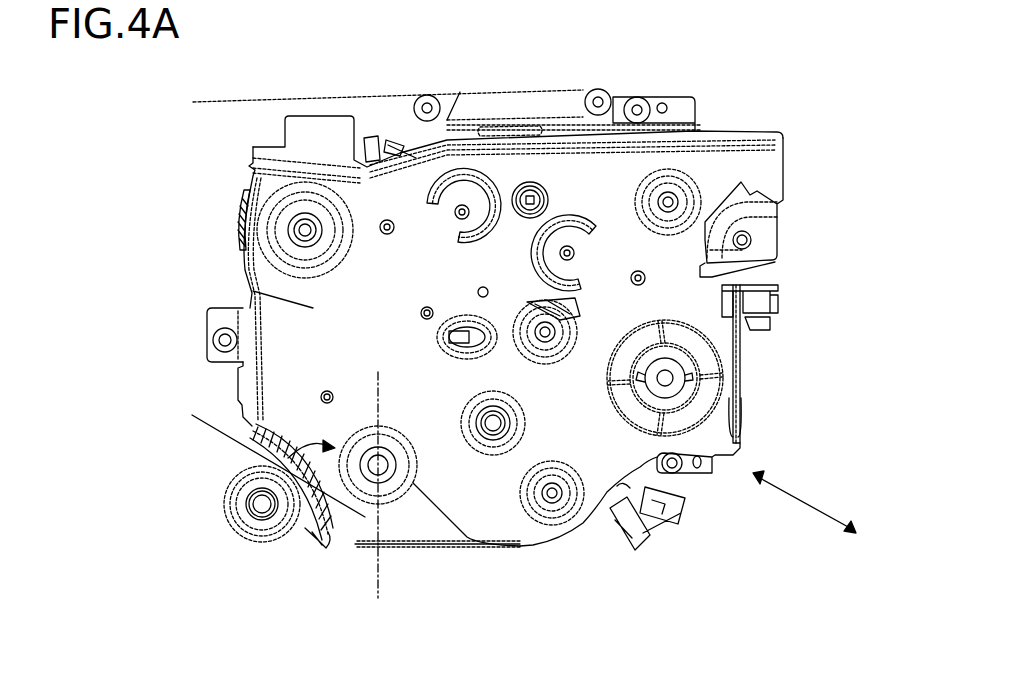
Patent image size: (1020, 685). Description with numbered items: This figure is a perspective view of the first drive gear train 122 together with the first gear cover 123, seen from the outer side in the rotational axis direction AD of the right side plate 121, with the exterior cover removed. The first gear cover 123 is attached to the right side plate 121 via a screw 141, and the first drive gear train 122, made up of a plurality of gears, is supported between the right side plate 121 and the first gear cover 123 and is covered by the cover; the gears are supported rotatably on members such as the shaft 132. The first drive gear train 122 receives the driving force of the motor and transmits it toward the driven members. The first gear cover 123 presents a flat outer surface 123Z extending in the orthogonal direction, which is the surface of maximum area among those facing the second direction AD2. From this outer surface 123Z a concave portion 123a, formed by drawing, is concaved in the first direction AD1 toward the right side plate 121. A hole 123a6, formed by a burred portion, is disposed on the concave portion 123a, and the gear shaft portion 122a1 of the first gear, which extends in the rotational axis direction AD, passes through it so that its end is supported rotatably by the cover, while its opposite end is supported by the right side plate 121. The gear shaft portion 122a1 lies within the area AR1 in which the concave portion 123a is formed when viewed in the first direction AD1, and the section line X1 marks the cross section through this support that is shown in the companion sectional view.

The right side plate 121 is at (260, 120).
The first drive gear train 122 is at (240, 205).
The outer surface 123Z is at (253, 291).
The screw 141 is at (213, 332).
The shaft 132 is at (643, 273).
The first gear cover 123 is at (758, 237).
The hole 123a6 is at (340, 515).
The gear shaft portion 122a1 is at (392, 480).
The concave portion 123a is at (488, 542).
The area AR1 is at (283, 464).
The X1-X1 cross section X1 is at (376, 397).
The rotational axis direction AD is at (804, 504).
The first direction AD1 is at (735, 488).
The second direction AD2 is at (856, 548).